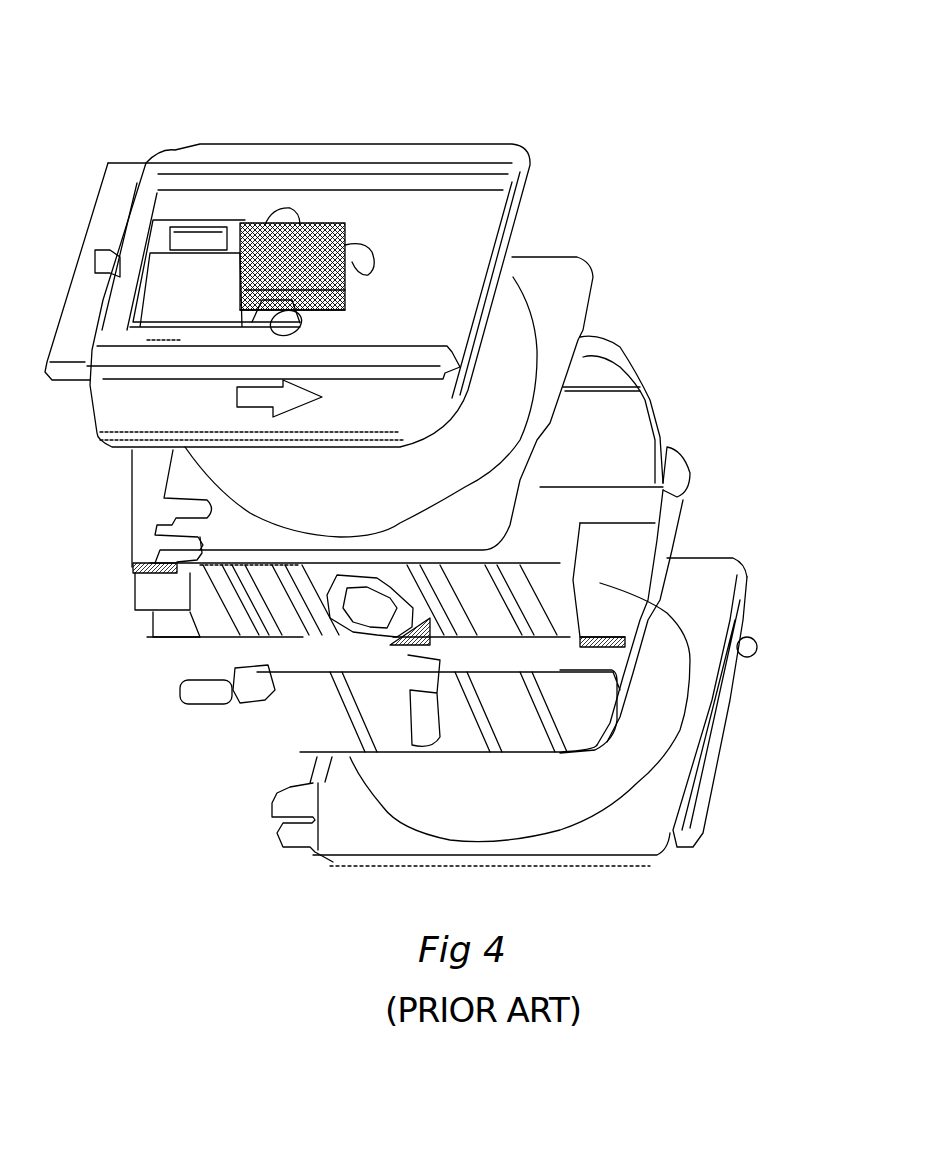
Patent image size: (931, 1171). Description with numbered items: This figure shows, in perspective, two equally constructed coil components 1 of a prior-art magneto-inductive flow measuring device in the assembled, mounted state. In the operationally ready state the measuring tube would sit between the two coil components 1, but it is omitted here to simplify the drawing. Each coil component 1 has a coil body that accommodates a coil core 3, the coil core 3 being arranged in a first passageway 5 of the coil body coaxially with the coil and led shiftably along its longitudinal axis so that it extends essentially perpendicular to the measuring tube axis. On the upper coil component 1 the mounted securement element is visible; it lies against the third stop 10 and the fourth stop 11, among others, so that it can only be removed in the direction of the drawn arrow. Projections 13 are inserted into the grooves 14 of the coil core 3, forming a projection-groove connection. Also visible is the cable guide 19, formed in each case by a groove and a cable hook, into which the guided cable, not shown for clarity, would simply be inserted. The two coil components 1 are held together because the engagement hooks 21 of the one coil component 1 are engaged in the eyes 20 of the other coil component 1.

The coil component 1 is at (605, 220).
The coil core 3 is at (500, 143).
The first passageway 5 is at (285, 240).
The third stop 10 is at (210, 233).
The fourth stop 11 is at (155, 185).
The projections 13 is at (378, 272).
The grooves 14 is at (358, 250).
The cable guide 19 is at (125, 572).
The eyes 20 is at (493, 567).
The engagement hooks 21 is at (493, 590).